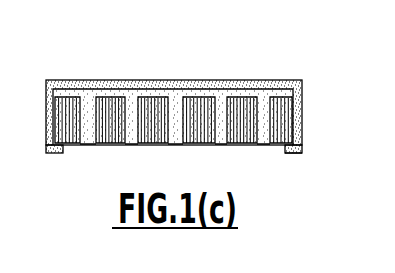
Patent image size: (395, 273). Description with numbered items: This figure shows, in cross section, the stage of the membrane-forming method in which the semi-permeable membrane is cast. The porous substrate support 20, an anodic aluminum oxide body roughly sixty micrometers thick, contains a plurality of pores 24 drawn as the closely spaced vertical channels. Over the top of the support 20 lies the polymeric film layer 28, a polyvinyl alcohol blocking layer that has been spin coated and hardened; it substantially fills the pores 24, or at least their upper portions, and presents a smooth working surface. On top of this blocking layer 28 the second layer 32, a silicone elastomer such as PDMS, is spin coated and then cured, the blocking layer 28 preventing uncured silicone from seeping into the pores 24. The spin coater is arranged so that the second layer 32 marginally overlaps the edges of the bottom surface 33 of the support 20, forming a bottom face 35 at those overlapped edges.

The porous substrate support 20 is at (200, 144).
The pores 24 is at (132, 144).
The polymeric film layer 28 is at (93, 57).
The second layer 32 is at (222, 84).
The bottom surface 33 is at (52, 153).
The bottom face 35 is at (293, 153).